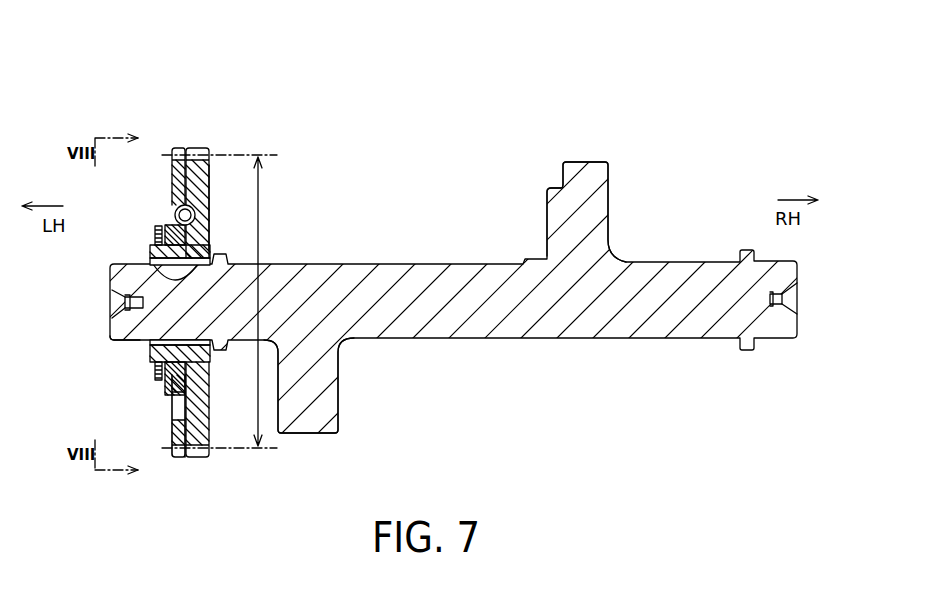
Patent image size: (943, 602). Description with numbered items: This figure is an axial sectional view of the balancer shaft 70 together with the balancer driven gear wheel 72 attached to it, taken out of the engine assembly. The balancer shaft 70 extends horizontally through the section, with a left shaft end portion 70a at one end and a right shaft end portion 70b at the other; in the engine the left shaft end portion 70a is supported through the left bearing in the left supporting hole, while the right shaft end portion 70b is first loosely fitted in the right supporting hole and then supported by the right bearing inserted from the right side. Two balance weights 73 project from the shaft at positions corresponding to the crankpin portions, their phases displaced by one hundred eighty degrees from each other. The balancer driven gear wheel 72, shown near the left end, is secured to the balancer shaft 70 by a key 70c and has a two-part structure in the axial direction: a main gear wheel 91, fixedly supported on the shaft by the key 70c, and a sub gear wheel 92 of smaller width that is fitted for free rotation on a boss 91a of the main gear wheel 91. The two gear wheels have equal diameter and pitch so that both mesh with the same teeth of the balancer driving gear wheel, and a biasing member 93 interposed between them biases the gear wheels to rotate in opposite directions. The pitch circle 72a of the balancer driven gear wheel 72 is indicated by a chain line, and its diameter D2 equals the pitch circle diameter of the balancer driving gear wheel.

The balancer shaft 70 is at (553, 340).
The left shaft end portion 70a is at (120, 343).
The right shaft end portion 70b is at (783, 342).
The key 70c is at (118, 281).
The balancer driven gear wheel 72 is at (180, 245).
The pitch circle 72a is at (272, 155).
The balance weight 73 is at (608, 196).
The main gear wheel 91 is at (197, 147).
The boss 91a is at (176, 213).
The sub gear wheel 92 is at (179, 147).
The biasing member 93 is at (210, 207).
The diameter of the pitch circle D2 is at (273, 301).